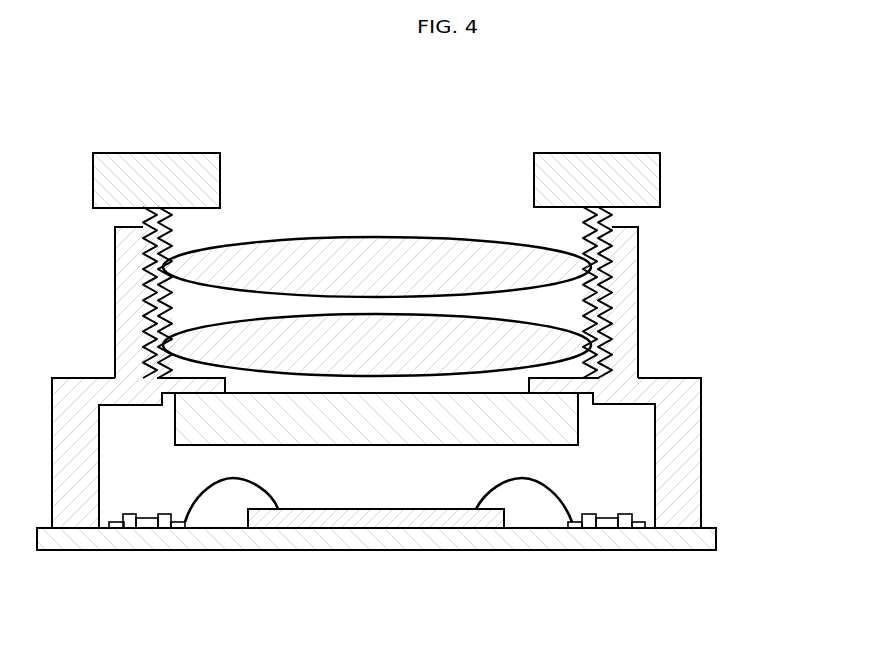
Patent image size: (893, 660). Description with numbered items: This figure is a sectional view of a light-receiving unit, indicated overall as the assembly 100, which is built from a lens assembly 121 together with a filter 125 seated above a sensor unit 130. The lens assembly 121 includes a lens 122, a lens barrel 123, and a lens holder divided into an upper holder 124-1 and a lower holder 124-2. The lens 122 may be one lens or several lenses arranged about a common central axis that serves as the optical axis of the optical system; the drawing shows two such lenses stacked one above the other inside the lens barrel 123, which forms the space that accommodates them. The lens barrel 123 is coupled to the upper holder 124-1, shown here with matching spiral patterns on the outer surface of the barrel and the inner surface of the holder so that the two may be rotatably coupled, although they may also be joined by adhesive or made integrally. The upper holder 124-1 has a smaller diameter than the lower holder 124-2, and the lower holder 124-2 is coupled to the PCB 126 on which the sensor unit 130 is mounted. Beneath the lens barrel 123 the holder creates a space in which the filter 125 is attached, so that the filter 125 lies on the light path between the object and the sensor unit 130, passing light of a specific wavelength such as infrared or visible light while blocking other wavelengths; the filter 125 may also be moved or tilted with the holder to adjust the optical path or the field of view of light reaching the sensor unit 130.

The camera module 100 is at (606, 130).
The lens assembly 121 is at (796, 506).
The lens 122 is at (625, 247).
The lens barrel 123 is at (635, 175).
The upper holder 124-1 is at (626, 249).
The lower holder 124-2 is at (687, 482).
The filter 125 is at (553, 423).
The PCB 126 is at (538, 538).
The sensor unit 130 is at (377, 518).